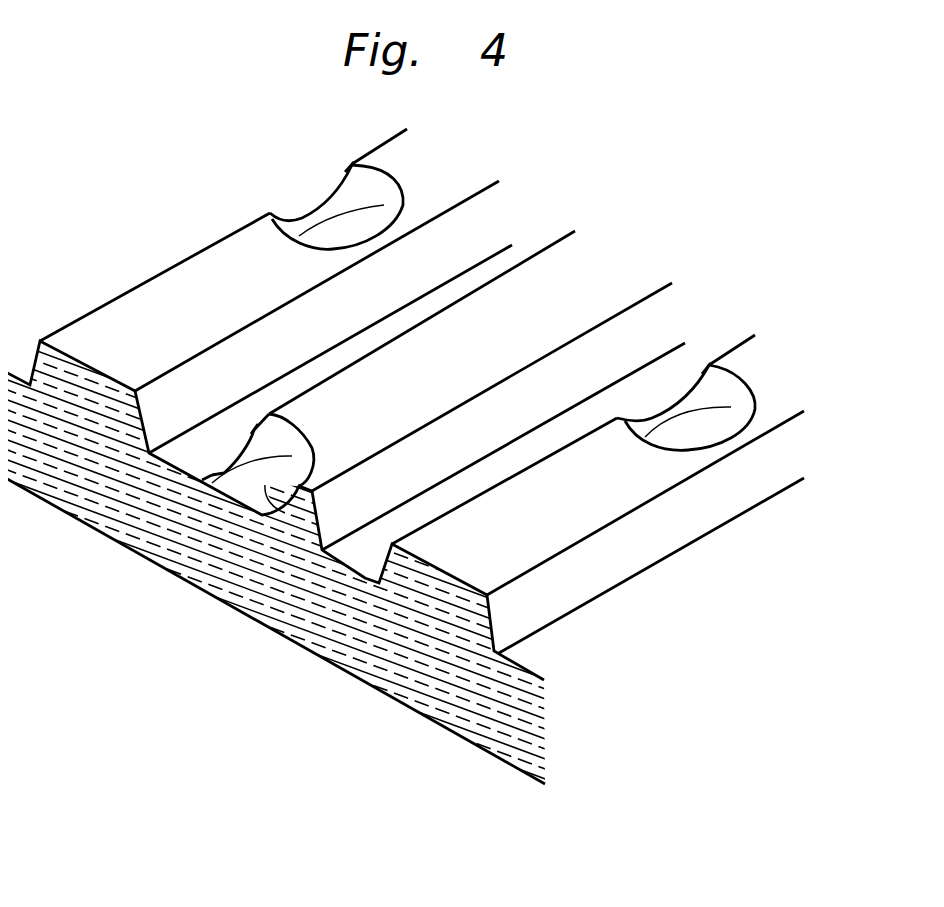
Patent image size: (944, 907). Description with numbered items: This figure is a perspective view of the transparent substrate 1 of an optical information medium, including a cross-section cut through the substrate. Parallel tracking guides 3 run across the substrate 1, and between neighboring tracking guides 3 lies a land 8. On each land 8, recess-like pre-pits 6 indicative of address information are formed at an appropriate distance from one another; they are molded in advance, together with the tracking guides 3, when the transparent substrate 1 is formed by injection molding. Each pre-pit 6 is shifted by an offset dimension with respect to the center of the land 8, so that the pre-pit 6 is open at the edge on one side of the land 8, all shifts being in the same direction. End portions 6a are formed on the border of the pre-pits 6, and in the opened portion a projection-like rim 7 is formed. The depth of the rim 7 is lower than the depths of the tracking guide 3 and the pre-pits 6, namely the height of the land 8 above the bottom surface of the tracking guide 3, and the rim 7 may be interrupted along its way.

The transparent substrate 1 is at (195, 588).
The tracking guide 3 is at (515, 255).
The pre-pit 6 is at (322, 232).
The end portion 6a is at (268, 212).
The rim 7 is at (347, 169).
The land 8 is at (204, 314).